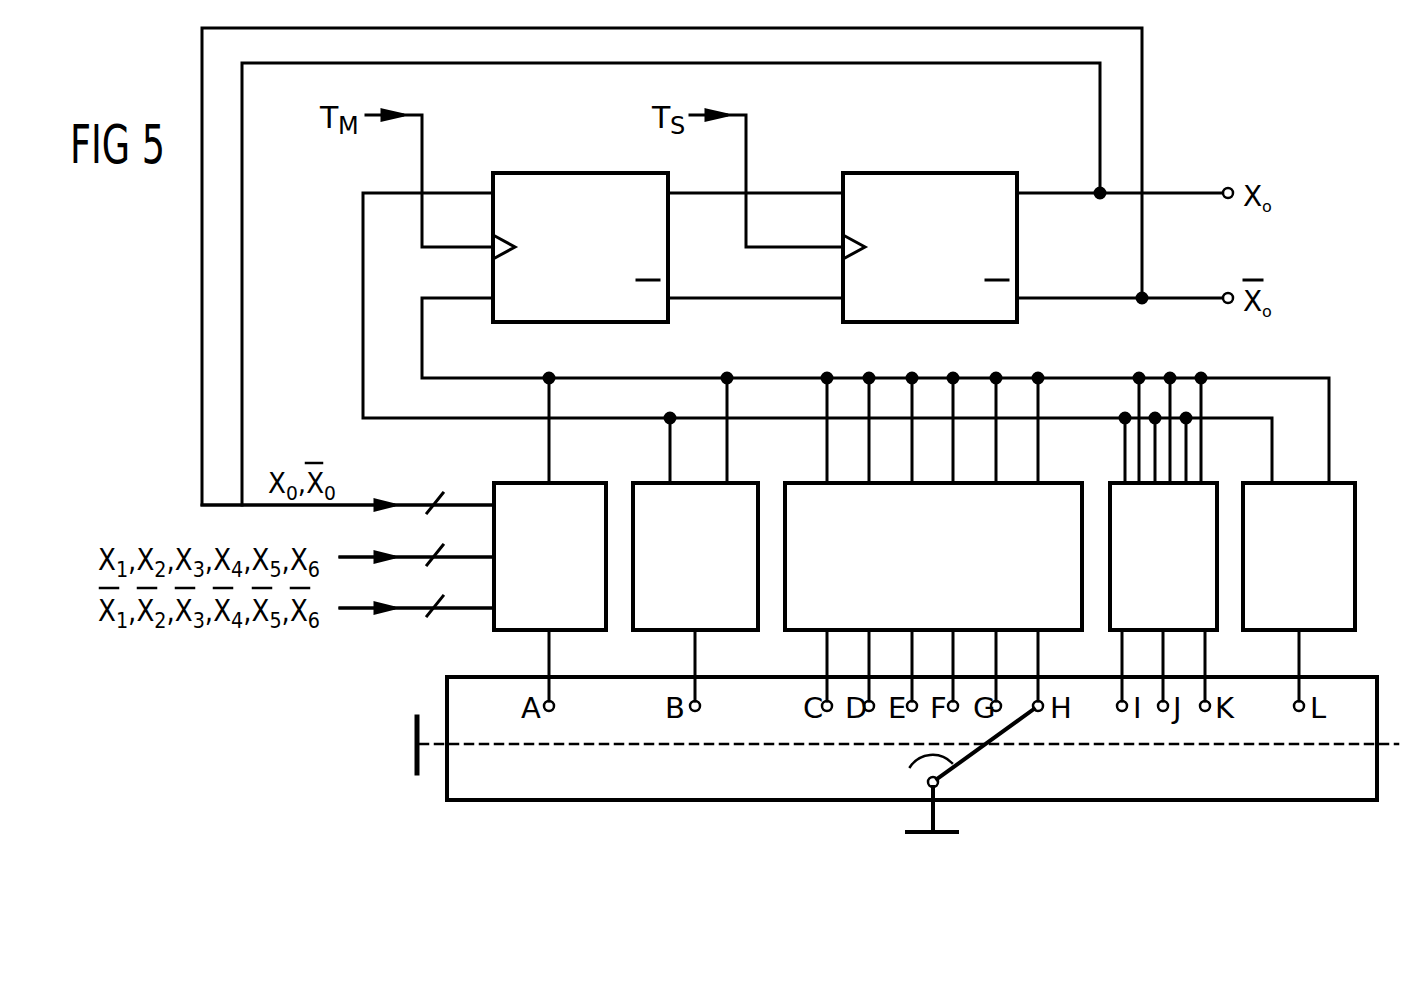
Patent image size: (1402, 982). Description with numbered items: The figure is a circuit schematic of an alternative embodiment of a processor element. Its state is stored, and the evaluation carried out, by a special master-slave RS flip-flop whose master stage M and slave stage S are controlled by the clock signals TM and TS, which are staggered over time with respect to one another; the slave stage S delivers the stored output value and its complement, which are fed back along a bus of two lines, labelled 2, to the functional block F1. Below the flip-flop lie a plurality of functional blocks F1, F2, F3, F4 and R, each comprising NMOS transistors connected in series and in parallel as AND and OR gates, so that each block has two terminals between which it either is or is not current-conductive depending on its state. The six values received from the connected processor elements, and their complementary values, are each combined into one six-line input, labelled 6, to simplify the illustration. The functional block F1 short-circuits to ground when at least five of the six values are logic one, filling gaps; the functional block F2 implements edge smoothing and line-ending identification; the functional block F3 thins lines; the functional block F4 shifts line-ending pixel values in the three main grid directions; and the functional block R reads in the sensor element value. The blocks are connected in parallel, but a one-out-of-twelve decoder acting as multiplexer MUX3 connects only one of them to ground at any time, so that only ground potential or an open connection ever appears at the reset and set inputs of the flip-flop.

The master flip-flop M is at (580, 247).
The slave flip-flop S is at (930, 247).
The functional block F1 is at (550, 556).
The functional block F2 is at (695, 556).
The functional block F3 is at (933, 556).
The functional block F4 is at (1163, 556).
The functional block R is at (1299, 556).
The multiplexer MUX3 is at (447, 800).
The two-line bus 2 is at (348, 488).
The six-line bus 6 is at (417, 567).